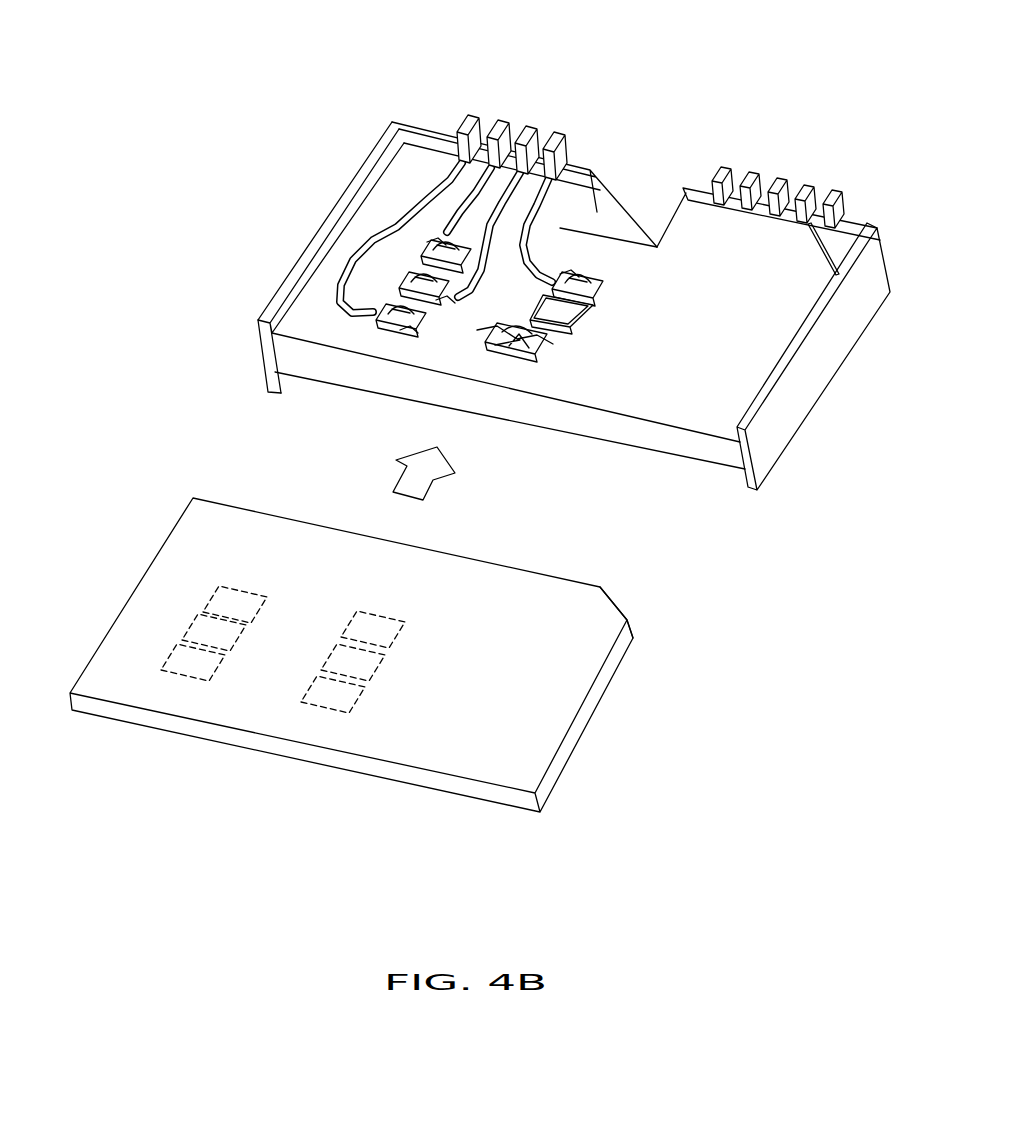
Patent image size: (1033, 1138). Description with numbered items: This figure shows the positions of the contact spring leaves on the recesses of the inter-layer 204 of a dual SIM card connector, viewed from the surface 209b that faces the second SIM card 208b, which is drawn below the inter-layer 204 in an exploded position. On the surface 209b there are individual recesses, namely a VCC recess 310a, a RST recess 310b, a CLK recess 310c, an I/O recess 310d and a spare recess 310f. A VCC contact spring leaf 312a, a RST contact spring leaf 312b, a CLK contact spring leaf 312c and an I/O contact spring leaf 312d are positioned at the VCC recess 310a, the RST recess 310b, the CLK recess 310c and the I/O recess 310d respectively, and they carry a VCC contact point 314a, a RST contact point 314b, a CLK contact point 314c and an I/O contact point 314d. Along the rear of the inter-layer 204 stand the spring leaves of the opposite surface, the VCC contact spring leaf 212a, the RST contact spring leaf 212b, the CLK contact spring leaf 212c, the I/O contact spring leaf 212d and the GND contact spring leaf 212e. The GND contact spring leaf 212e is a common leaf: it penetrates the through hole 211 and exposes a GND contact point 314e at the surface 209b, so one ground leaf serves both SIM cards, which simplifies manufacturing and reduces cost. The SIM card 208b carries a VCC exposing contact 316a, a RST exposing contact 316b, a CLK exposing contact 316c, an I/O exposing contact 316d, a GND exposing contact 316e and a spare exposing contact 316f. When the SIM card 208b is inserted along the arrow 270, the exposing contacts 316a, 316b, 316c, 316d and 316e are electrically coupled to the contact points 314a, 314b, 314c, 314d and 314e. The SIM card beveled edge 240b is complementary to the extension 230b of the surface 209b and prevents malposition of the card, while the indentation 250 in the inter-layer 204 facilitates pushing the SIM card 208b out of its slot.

The inter-layer 204 is at (790, 418).
The SIM card 208b is at (543, 733).
The surface 209b is at (637, 400).
The through hole 211 is at (579, 367).
The VCC contact spring leaf 212a is at (832, 190).
The RST contact spring leaf 212b is at (805, 185).
The CLK contact spring leaf 212c is at (778, 178).
The I/O contact spring leaf 212d is at (721, 167).
The GND contact spring leaf 212e is at (750, 172).
The extension 230b is at (830, 245).
The SIM card beveled edge 240b is at (617, 603).
The indentation 250 is at (623, 230).
The arrow 270 is at (420, 480).
The VCC recess 310a is at (384, 343).
The RST recess 310b is at (385, 280).
The CLK recess 310c is at (404, 249).
The I/O recess 310d is at (614, 294).
The spare recess 310f is at (596, 328).
The VCC contact spring leaf 312a is at (470, 116).
The RST contact spring leaf 312b is at (533, 128).
The CLK contact spring leaf 312c is at (498, 121).
The I/O contact spring leaf 312d is at (558, 135).
The VCC contact point 314a is at (410, 327).
The RST contact point 314b is at (430, 313).
The CLK contact point 314c is at (430, 238).
The I/O contact point 314d is at (587, 268).
The GND contact point 314e is at (562, 360).
The VCC exposing contact 316a is at (177, 657).
The RST exposing contact 316b is at (187, 630).
The CLK exposing contact 316c is at (210, 593).
The I/O exposing contact 316d is at (397, 635).
The GND exposing contact 316e is at (367, 703).
The spare exposing contact 316f is at (377, 670).